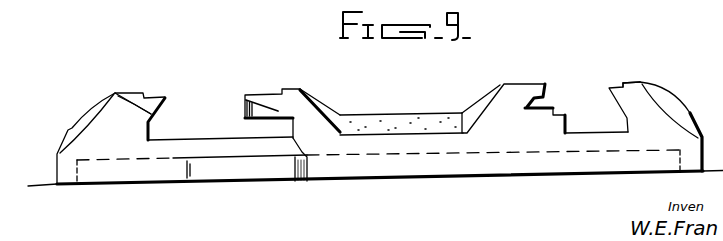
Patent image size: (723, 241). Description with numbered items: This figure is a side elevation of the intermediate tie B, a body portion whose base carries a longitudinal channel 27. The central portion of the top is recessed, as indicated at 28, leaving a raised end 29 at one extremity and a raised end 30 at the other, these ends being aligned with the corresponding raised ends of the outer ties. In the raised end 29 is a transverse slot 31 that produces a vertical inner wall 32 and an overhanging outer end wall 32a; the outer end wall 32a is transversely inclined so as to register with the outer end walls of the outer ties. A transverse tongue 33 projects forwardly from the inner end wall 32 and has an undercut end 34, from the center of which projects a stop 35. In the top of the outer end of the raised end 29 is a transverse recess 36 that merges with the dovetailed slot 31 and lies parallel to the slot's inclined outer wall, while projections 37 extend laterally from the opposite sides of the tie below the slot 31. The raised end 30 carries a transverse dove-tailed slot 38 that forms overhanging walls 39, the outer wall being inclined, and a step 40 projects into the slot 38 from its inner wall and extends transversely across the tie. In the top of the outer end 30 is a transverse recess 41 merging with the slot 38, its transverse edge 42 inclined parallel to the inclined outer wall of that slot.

The longitudinal channel 27 is at (612, 152).
The recess 28 is at (410, 117).
The raised end 29 is at (312, 91).
The raised end 30 is at (490, 100).
The transverse slot 31 is at (205, 137).
The vertical inner wall 32 is at (305, 158).
The overhanging outer end wall 32a is at (115, 98).
The transverse tongue 33 is at (150, 114).
The undercut end 34 is at (245, 100).
The stop 35 is at (262, 119).
The transverse recess 36 is at (157, 97).
The projections 37 is at (537, 88).
The transverse dove-tailed slot 38 is at (592, 132).
The overhanging walls 39 is at (620, 103).
The step 40 is at (550, 115).
The transverse recess 41 is at (619, 87).
The transverse edge 42 is at (630, 85).
The intermediate tie B is at (424, 177).